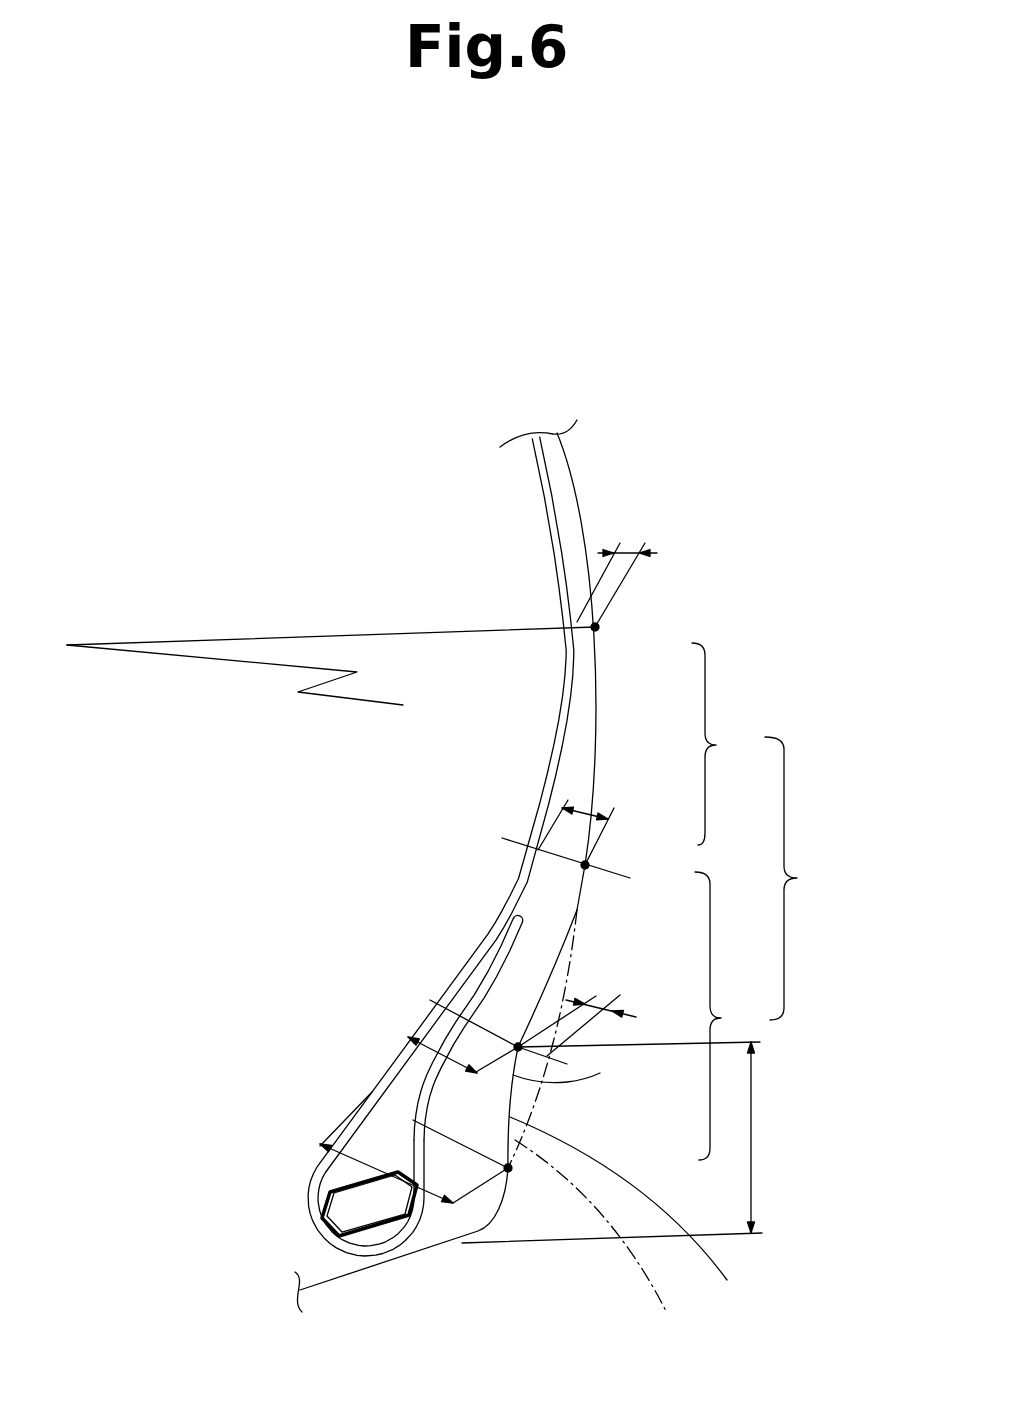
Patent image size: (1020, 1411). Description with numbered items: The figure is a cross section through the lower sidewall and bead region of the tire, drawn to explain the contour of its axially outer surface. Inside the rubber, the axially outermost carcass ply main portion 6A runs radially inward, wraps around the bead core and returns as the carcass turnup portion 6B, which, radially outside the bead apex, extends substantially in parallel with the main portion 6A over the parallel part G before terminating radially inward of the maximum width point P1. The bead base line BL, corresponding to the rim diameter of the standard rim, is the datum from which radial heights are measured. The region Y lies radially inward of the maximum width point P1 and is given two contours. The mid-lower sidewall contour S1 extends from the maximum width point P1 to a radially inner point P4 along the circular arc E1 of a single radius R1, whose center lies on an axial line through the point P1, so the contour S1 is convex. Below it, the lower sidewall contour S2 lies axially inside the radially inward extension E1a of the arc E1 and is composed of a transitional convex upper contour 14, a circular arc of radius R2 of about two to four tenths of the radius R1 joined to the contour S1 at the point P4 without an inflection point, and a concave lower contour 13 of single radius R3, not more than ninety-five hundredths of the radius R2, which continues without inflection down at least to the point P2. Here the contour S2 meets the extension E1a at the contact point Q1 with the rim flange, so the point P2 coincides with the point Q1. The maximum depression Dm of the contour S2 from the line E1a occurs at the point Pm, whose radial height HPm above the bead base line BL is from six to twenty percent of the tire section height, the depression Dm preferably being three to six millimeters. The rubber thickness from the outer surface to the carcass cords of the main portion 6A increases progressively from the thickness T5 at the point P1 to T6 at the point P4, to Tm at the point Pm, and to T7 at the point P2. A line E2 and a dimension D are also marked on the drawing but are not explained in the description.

The carcass ply main portion 6A is at (543, 490).
The carcass turnup portion 6B is at (420, 1096).
The concave lower contour 13 is at (576, 1072).
The convex upper contour 14 is at (565, 940).
The parallel part G is at (477, 940).
The circular arc E1 is at (597, 687).
The radially inward extension of circular arc line E1a is at (597, 1130).
The bead outer profile line E2 is at (629, 1217).
The bead base line BL is at (497, 1243).
The maximum width point P1 is at (595, 627).
The radially inner point P4 is at (585, 865).
The maximum depression point Pm is at (518, 1047).
The radially inner end point of lower sidewall contour P2 is at (508, 1168).
The contact point Q1 is at (535, 1336).
The radius of circular arc E1 R1 is at (597, 727).
The radius of convex upper contour R2 is at (560, 947).
The radius of concave lower contour R3 is at (510, 1102).
The rubber thickness at point P1 T5 is at (628, 550).
The rubber thickness at point P4 T6 is at (590, 812).
The rubber thickness at point Pm Tm is at (468, 1069).
The rubber thickness at point P2 T7 is at (310, 1178).
The maximum depression Dm is at (577, 1013).
The displacement D is at (648, 985).
The radial height of point Pm HPm is at (758, 1128).
The mid-lower sidewall contour S1 is at (724, 744).
The lower sidewall contour S2 is at (728, 1016).
The region Y is at (791, 878).